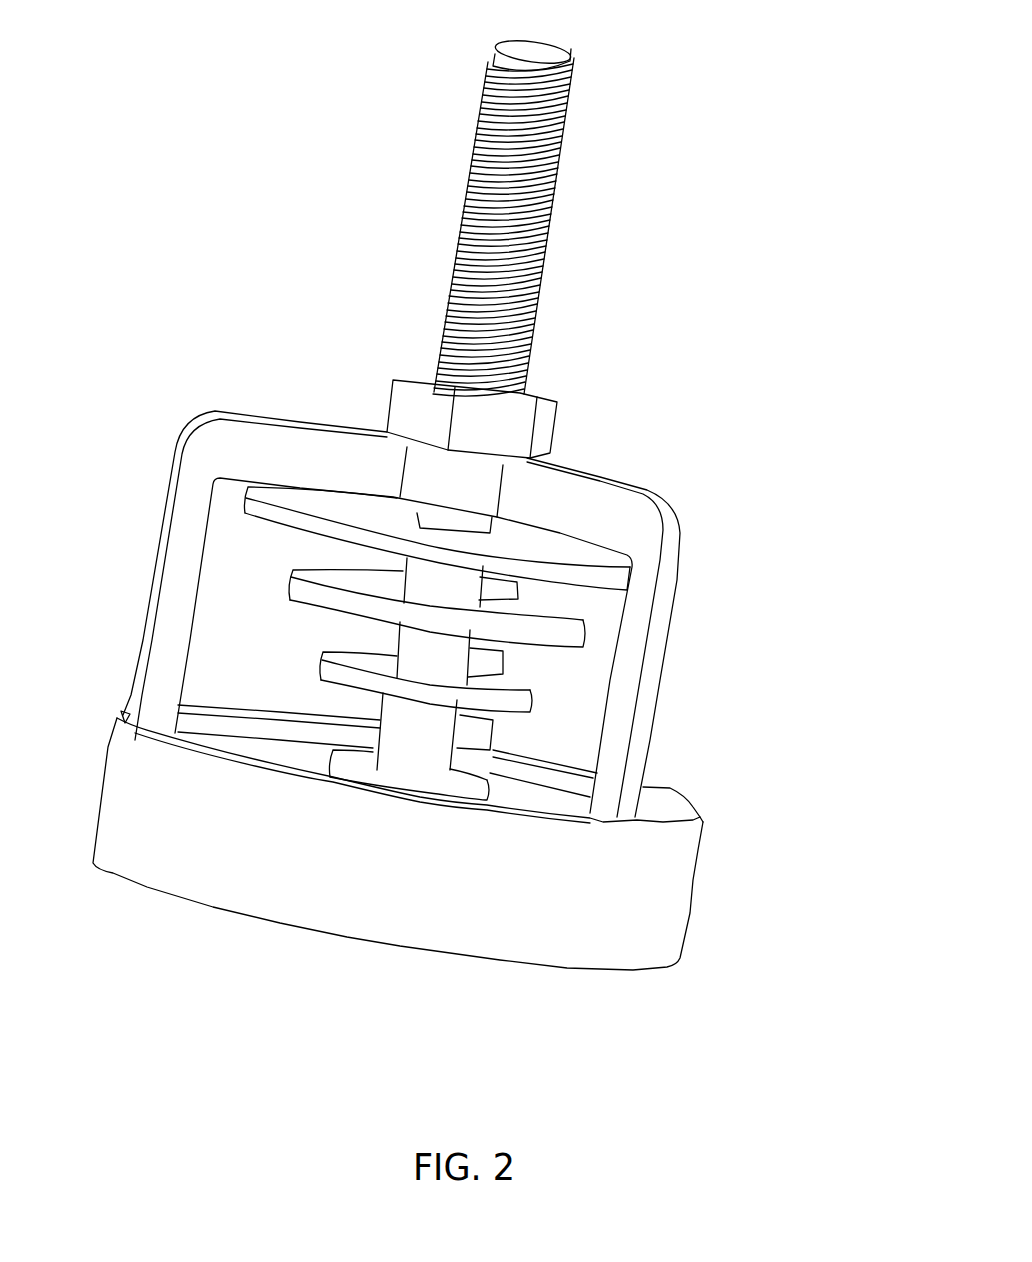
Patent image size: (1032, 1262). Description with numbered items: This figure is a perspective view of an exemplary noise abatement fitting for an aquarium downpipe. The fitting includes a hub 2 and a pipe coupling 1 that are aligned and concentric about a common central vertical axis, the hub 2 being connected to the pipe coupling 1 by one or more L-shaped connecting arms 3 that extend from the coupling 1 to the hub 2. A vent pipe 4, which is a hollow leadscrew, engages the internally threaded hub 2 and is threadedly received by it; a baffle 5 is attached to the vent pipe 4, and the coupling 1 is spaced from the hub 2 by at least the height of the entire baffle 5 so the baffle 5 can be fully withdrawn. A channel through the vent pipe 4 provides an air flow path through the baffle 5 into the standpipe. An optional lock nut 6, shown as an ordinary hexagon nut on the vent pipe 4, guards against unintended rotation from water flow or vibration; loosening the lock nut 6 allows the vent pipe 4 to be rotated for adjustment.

The pipe coupling 1 is at (668, 910).
The hub 2 is at (433, 472).
The connecting arms 3 is at (653, 638).
The vent pipe 4 is at (573, 75).
The baffle 5 is at (342, 676).
The lock nut 6 is at (523, 421).